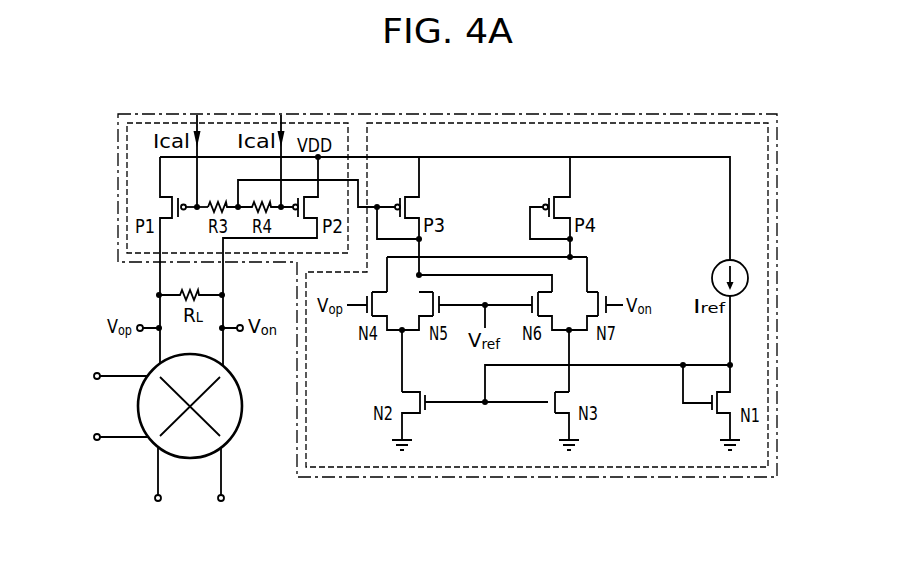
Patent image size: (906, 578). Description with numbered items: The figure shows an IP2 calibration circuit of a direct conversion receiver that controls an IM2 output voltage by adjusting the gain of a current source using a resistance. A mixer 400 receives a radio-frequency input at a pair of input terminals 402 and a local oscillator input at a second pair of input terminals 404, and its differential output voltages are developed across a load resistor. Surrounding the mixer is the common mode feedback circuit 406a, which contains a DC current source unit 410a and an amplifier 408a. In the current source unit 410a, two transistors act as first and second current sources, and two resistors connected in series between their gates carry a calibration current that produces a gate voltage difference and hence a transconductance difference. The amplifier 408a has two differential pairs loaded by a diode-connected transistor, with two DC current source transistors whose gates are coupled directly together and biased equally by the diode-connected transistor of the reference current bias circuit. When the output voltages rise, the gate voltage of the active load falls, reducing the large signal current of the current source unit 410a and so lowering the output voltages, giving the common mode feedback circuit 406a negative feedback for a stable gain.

The mixer 400 is at (243, 393).
The RF input terminals 402 is at (122, 437).
The LO input terminals 404 is at (222, 471).
The common mode feedback circuit 406a is at (645, 113).
The amplifier 408a is at (500, 468).
The DC current source unit 410a is at (127, 183).